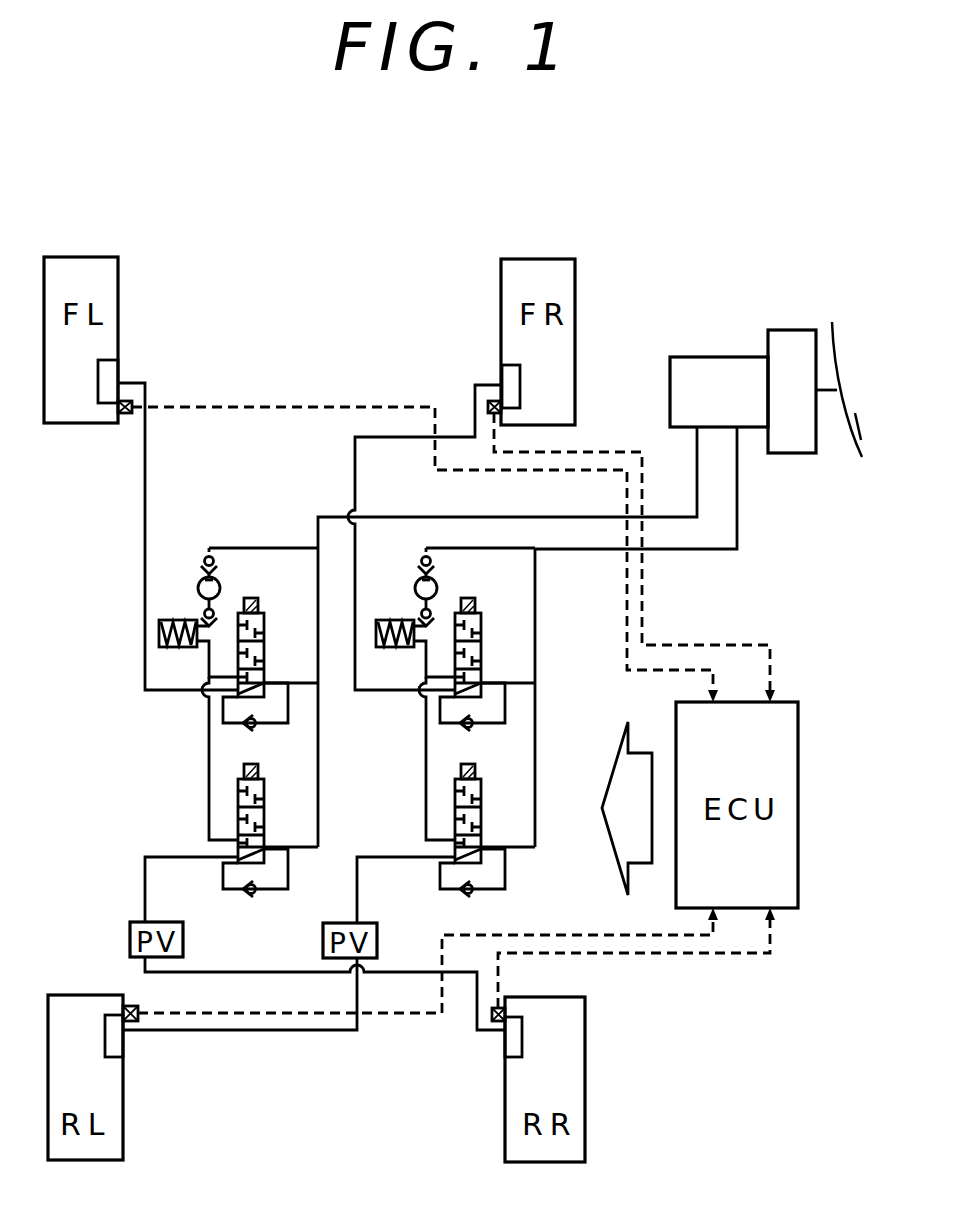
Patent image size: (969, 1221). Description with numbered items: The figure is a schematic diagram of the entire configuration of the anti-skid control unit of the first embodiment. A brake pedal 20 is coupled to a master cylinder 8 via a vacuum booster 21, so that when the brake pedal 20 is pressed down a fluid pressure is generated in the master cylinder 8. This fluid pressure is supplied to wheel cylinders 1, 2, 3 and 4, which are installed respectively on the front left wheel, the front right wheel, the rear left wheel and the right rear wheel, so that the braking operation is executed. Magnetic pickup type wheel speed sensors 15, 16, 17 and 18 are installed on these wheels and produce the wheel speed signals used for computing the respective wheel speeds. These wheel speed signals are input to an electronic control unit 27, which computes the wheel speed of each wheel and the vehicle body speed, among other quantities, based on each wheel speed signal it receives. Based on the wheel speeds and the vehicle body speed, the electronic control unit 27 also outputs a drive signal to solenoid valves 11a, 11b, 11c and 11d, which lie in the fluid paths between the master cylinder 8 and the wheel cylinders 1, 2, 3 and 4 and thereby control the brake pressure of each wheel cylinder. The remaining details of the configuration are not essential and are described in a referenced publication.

The wheel cylinder 1 is at (98, 393).
The wheel cylinder 2 is at (522, 388).
The wheel cylinder 3 is at (105, 1033).
The wheel cylinder 4 is at (522, 1028).
The master cylinder 8 is at (697, 357).
The solenoid valve 11a is at (264, 614).
The solenoid valve 11b is at (481, 614).
The solenoid valve 11c is at (264, 780).
The solenoid valve 11d is at (481, 780).
The wheel speed sensor 15 is at (127, 414).
The wheel speed sensor 16 is at (494, 414).
The wheel speed sensor 17 is at (134, 1006).
The wheel speed sensor 18 is at (497, 1007).
The brake pedal 20 is at (866, 417).
The vacuum booster 21 is at (786, 330).
The electronic control unit 27 is at (798, 868).